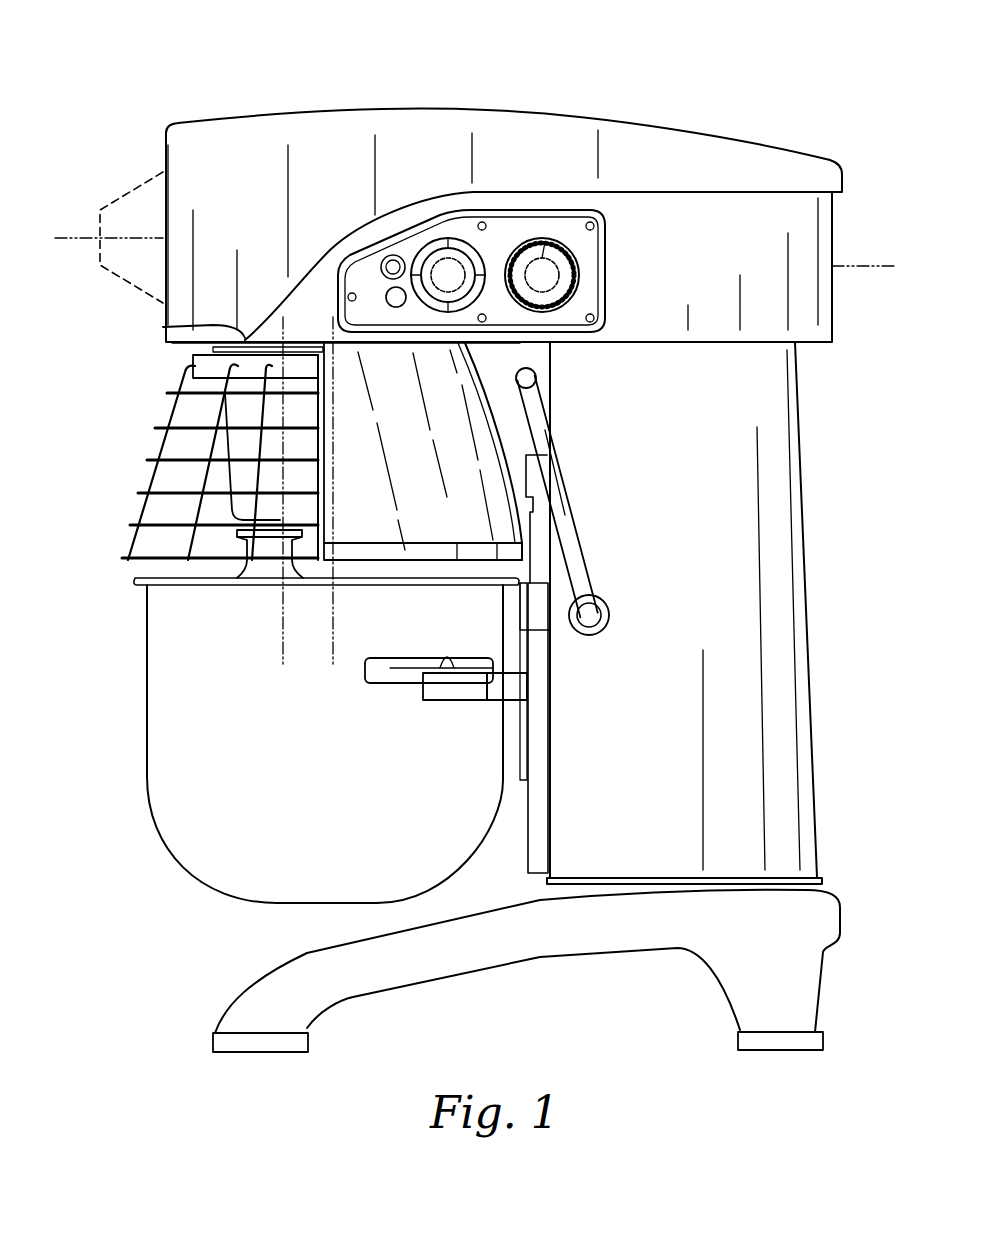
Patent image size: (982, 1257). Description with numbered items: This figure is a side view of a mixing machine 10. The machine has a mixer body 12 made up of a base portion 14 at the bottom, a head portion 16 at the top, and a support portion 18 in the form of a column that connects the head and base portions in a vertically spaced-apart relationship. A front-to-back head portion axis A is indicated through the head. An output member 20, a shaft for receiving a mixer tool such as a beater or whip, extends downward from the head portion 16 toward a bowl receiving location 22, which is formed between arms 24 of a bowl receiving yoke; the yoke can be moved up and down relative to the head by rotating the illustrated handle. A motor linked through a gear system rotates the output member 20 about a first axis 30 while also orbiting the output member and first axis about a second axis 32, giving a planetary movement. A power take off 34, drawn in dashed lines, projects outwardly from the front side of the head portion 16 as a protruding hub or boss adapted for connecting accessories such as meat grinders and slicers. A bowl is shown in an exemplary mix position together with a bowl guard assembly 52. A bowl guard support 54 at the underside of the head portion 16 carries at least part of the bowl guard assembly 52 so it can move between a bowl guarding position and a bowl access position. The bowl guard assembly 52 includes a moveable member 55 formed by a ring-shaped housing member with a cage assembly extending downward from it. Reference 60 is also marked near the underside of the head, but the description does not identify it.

The mixing machine 10 is at (793, 109).
The mixer body 12 is at (827, 511).
The base portion 14 is at (830, 920).
The head portion 16 is at (822, 287).
The support portion 18 is at (793, 651).
The output member 20 is at (267, 522).
The bowl receiving location 22 is at (115, 629).
The arms 24 is at (470, 697).
The first axis 30 is at (283, 636).
The second axis 32 is at (337, 631).
The power take off 34 is at (124, 196).
The head portion axis A is at (77, 237).
The bowl guard assembly 52 is at (150, 407).
The bowl guard support 54 is at (212, 385).
The moveable member 55 is at (145, 441).
The head underside collar 60 is at (168, 328).